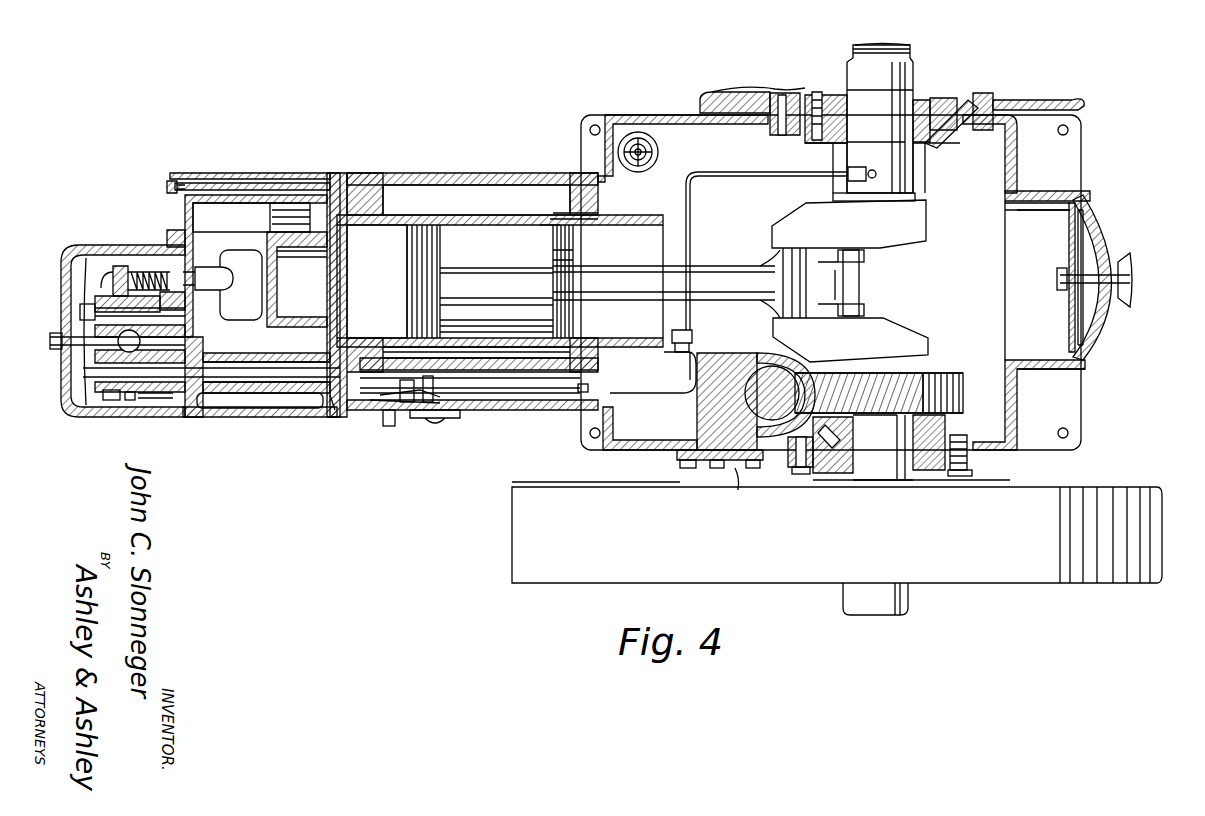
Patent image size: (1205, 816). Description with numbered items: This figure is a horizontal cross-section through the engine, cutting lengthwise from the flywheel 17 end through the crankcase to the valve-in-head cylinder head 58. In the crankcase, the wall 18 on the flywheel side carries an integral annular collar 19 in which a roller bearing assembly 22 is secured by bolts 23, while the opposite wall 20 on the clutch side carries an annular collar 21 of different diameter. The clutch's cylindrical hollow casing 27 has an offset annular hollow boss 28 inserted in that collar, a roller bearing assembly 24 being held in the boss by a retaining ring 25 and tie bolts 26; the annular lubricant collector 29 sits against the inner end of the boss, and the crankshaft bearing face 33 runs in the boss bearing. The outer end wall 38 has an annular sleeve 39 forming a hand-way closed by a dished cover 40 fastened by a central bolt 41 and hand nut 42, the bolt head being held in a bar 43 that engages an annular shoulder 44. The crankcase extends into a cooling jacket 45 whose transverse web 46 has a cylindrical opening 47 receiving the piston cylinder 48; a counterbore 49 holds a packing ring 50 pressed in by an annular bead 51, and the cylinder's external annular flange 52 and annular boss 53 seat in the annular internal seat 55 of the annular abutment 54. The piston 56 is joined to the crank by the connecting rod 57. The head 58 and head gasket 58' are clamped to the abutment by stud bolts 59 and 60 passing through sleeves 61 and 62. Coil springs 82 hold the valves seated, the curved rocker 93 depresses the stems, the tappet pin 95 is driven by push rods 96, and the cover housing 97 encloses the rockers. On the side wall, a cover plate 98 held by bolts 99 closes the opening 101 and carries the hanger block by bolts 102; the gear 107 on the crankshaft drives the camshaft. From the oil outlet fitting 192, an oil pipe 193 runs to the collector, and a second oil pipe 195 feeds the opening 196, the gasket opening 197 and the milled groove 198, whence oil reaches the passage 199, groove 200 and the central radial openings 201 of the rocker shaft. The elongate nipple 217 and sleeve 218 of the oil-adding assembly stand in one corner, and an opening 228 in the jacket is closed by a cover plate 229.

The flywheel 17 is at (545, 487).
The wall 18 is at (1000, 445).
The annular collar 19 is at (968, 448).
The wall 20 is at (652, 115).
The annular collar 21 is at (770, 130).
The roller bearing assembly 22 is at (792, 472).
The bolts 23 is at (972, 474).
The roller bearing assembly 24 is at (930, 145).
The retaining ring 25 is at (942, 98).
The tie bolts 26 is at (816, 92).
The cylindrical hollow casing 27 is at (1084, 106).
The annular hollow boss 28 is at (962, 138).
The annular lubricant collector 29 is at (915, 198).
The annular bearing face 33 is at (895, 338).
The outer end wall 38 is at (1008, 386).
The annular sleeve 39 is at (1060, 191).
The dished cover 40 is at (1098, 222).
The central bolt 41 is at (1057, 284).
The hand nut 42 is at (1126, 253).
The bar 43 is at (1067, 250).
The annular shoulder 44 is at (1090, 358).
The cooling jacket 45 is at (510, 173).
The transverse web 46 is at (600, 190).
The cylindrical opening 47 is at (580, 212).
The piston cylinder 48 is at (620, 215).
The counterbore 49 is at (600, 368).
The packing ring 50 is at (578, 232).
The annular bead 51 is at (548, 214).
The external annular flange 52 is at (352, 236).
The annular boss 53 is at (352, 338).
The annular abutment 54 is at (392, 207).
The annular internal seat 55 is at (365, 180).
The piston 56 is at (535, 304).
The connecting rod 57 is at (700, 270).
The cylinder head 58 is at (260, 426).
The head gasket 58' is at (339, 283).
The stud bolt 59 is at (262, 183).
The stud bolt 60 is at (300, 393).
The sleeve 61 is at (238, 195).
The sleeve 62 is at (258, 330).
The coil springs 82 is at (140, 270).
The curved rocker 93 is at (105, 270).
The tappet pin 95 is at (118, 400).
The push rods 96 is at (132, 400).
The cover housing 97 is at (168, 400).
The cover plate 98 is at (724, 486).
The bolts 99 is at (680, 467).
The opening 101 is at (695, 437).
The bolts 102 is at (714, 470).
The gear 107 is at (948, 414).
The oil outlet fitting 192 is at (694, 356).
The oil pipe 193 is at (816, 175).
The second oil pipe 195 is at (570, 395).
The opening 196 is at (395, 347).
The opening 197 is at (333, 412).
The milled groove 198 is at (317, 373).
The passage 199 is at (208, 278).
The groove 200 is at (190, 343).
The central radial openings 201 is at (85, 372).
The elongate nipple 217 is at (658, 146).
The sleeve 218 is at (658, 155).
The opening 228 is at (470, 414).
The cover plate 229 is at (462, 418).